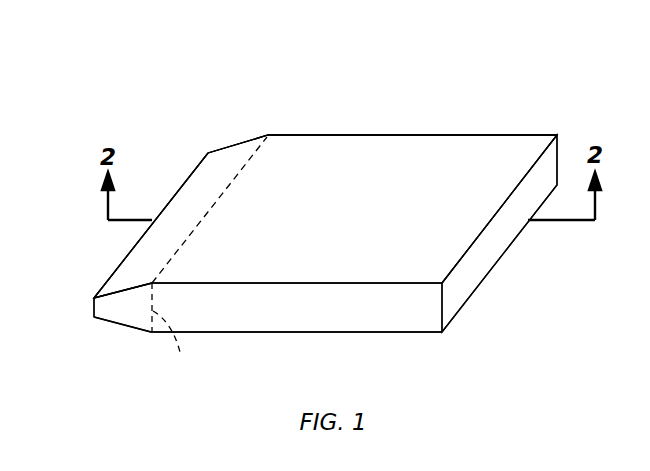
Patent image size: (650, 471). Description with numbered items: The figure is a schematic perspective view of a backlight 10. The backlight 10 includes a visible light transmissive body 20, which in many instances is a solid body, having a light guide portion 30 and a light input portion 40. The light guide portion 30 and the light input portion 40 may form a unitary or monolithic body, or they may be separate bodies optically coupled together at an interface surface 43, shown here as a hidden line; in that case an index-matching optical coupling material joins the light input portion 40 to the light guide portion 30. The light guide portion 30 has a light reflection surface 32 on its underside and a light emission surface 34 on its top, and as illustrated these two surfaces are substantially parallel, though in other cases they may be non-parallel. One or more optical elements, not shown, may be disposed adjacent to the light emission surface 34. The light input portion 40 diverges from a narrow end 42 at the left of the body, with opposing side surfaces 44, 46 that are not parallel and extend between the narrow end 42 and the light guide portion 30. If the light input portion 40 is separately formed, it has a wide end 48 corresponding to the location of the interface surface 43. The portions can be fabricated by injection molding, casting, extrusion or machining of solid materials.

The backlight 10 is at (430, 67).
The visible light transmissive body 20 is at (350, 123).
The light guide portion 30 is at (517, 150).
The light reflection surface 32 is at (428, 333).
The light emission surface 34 is at (369, 229).
The light input portion 40 is at (215, 167).
The narrow end 42 is at (94, 306).
The interface surface 43 is at (173, 332).
The side surface 44 is at (124, 329).
The side surface 46 is at (121, 289).
The wide end 48 is at (247, 162).